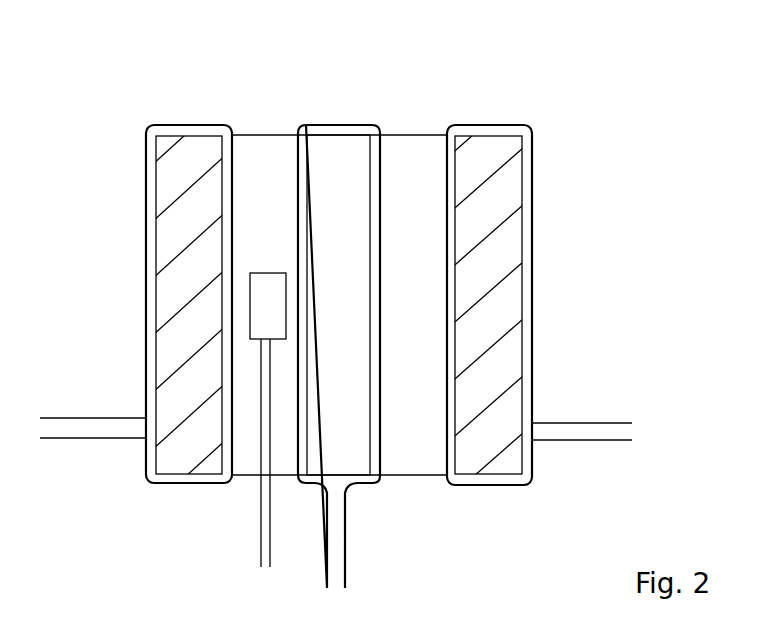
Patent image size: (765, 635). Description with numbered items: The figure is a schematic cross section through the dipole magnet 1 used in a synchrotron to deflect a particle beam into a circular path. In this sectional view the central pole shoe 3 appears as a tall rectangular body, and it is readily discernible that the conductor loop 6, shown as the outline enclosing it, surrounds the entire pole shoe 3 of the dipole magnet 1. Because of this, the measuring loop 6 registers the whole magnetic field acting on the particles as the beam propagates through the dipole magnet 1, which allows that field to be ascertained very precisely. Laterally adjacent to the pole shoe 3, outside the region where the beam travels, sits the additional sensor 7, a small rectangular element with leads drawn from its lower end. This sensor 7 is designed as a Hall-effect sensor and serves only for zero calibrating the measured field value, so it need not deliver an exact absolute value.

The dipole magnet 1 is at (647, 194).
The pole shoe 3 is at (357, 160).
The measuring loop 6 is at (340, 126).
The Hall-effect sensor 7 is at (265, 283).